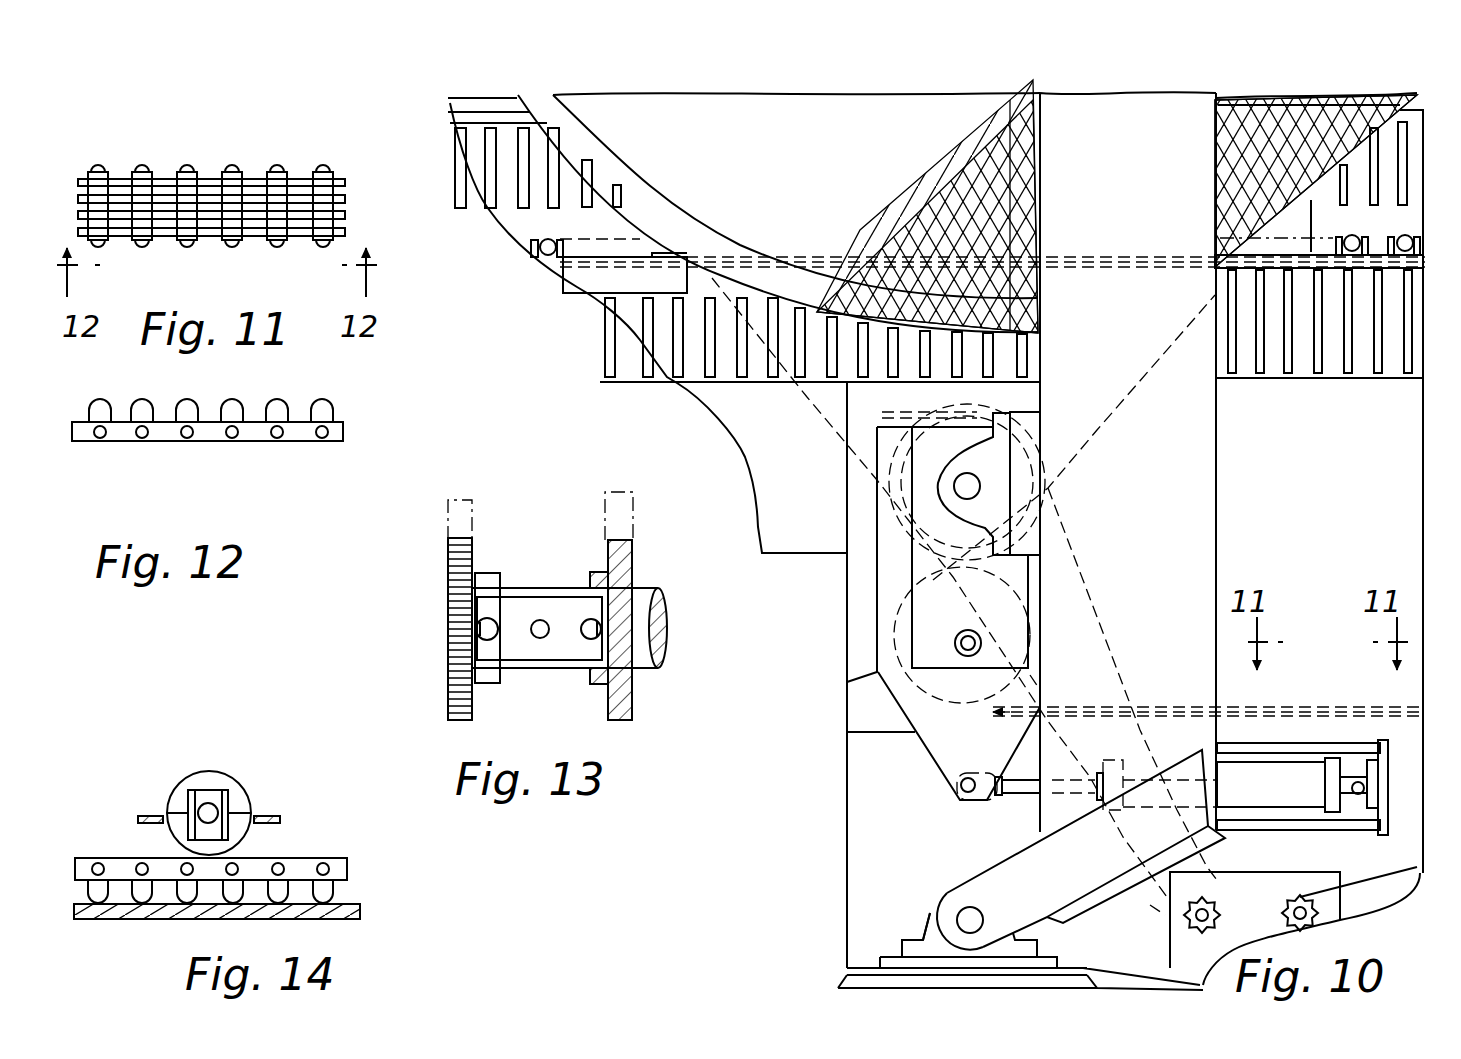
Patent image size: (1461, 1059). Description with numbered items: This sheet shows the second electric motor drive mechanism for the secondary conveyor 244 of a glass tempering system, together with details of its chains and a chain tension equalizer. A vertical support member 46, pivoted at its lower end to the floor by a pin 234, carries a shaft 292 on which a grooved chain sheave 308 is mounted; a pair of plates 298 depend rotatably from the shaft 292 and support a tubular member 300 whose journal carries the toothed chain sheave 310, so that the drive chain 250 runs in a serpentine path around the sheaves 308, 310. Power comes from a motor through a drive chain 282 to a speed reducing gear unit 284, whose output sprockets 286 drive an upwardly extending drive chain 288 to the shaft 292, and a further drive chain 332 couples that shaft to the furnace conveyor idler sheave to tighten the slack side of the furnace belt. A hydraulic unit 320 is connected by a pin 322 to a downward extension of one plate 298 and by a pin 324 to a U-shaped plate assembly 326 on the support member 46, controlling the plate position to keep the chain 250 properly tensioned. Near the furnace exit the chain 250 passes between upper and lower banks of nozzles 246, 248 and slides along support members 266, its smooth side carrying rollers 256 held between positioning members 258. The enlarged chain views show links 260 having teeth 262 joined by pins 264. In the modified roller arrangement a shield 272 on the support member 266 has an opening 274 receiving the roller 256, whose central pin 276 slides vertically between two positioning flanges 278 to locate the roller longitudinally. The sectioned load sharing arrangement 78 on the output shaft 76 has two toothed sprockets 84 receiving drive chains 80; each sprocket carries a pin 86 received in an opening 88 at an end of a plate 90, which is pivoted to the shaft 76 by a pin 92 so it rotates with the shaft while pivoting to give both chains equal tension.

In FIG. 10, the vertical support member 46 is at (1210, 495).
In FIG. 13, the output shaft 76 is at (637, 597).
In FIG. 13, the load sharing arrangement 78 is at (440, 578).
In FIG. 13, the drive chain 80 is at (443, 510).
In FIG. 13, the toothed sprocket 84 is at (458, 633).
In FIG. 13, the pin 86 is at (603, 633).
In FIG. 13, the opening 88 is at (487, 628).
In FIG. 13, the plate 90 is at (552, 607).
In FIG. 13, the pin 92 is at (540, 635).
In FIG. 10, the pin 234 is at (965, 912).
In FIG. 10, the secondary conveyor 244 is at (1320, 226).
In FIG. 10, the upper bank of nozzles 246 is at (492, 172).
In FIG. 10, the lower bank of nozzles 248 is at (648, 328).
In FIG. 11, the drive chain 250 is at (295, 163).
In FIG. 12, the drive chain 250 is at (308, 442).
In FIG. 14, the drive chain 250 is at (350, 853).
In FIG. 10, the drive chain 250 is at (545, 266).
In FIG. 14, the roller 256 is at (209, 812).
In FIG. 10, the roller 256 is at (540, 241).
In FIG. 10, the positioning member 258 is at (540, 258).
In FIG. 11, the link 260 is at (293, 235).
In FIG. 12, the link 260 is at (292, 443).
In FIG. 14, the link 260 is at (157, 862).
In FIG. 11, the tooth 262 is at (183, 190).
In FIG. 12, the tooth 262 is at (180, 407).
In FIG. 14, the tooth 262 is at (172, 890).
In FIG. 11, the pin 264 is at (273, 170).
In FIG. 12, the pin 264 is at (140, 442).
In FIG. 14, the pin 264 is at (280, 870).
In FIG. 14, the support member 266 is at (340, 912).
In FIG. 10, the support member 266 is at (633, 255).
In FIG. 14, the shield 272 is at (147, 818).
In FIG. 14, the opening 274 is at (247, 814).
In FIG. 14, the central pin 276 is at (207, 803).
In FIG. 14, the positioning flange 278 is at (188, 800).
In FIG. 10, the drive chain 282 is at (1357, 885).
In FIG. 10, the speed reducing gear unit 284 is at (1227, 872).
In FIG. 10, the sprocket 286 is at (1193, 933).
In FIG. 10, the drive chain 288 is at (1168, 898).
In FIG. 10, the shaft 292 is at (968, 486).
In FIG. 10, the plate 298 is at (885, 670).
In FIG. 10, the tubular member 300 is at (968, 643).
In FIG. 10, the chain sheave 308 is at (1025, 405).
In FIG. 10, the chain sheave 310 is at (1035, 680).
In FIG. 10, the hydraulic unit 320 is at (1272, 772).
In FIG. 10, the pin 322 is at (967, 795).
In FIG. 10, the pin 324 is at (1358, 797).
In FIG. 10, the U-shaped plate assembly 326 is at (1345, 748).
In FIG. 10, the drive chain 332 is at (1130, 395).